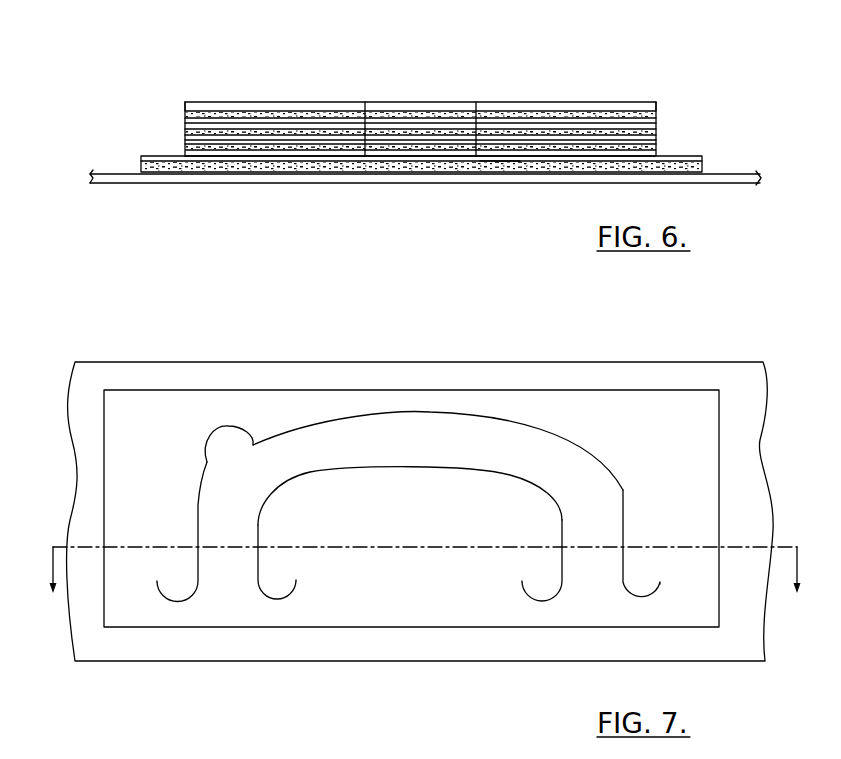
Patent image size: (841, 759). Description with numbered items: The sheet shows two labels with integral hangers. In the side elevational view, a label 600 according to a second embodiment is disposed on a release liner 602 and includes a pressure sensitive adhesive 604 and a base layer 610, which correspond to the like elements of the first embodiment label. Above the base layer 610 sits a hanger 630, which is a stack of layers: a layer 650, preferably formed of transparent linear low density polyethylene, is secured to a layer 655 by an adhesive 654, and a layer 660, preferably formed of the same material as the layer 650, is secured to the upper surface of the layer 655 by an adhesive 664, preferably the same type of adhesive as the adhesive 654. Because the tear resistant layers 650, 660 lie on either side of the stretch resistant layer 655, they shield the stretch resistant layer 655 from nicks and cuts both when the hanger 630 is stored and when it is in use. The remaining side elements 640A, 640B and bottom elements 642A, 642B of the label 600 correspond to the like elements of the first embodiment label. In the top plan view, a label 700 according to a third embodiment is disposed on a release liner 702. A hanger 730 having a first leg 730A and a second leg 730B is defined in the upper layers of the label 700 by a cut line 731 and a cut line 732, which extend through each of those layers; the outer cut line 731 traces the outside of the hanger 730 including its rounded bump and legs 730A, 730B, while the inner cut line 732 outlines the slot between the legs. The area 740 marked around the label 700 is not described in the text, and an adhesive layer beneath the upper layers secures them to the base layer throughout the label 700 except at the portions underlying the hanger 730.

In FIG. 6, the label 600 is at (467, 68).
In FIG. 6, the release liner 602 is at (718, 173).
In FIG. 6, the pressure sensitive adhesive 604 is at (500, 167).
In FIG. 6, the base layer 610 is at (668, 161).
In FIG. 6, the hanger 630 is at (387, 88).
In FIG. 6, the first side section 640A is at (257, 88).
In FIG. 6, the second side section 640B is at (562, 96).
In FIG. 6, the first bottom element 642A is at (185, 149).
In FIG. 6, the second bottom element 642B is at (488, 149).
In FIG. 6, the layer 650 is at (186, 138).
In FIG. 6, the adhesive 654 is at (186, 132).
In FIG. 6, the layer 655 is at (186, 127).
In FIG. 6, the layer 660 is at (204, 102).
In FIG. 6, the adhesive 664 is at (186, 121).
In FIG. 7, the label 700 is at (474, 350).
In FIG. 7, the release liner 702 is at (464, 658).
In FIG. 7, the hanger 730 is at (415, 430).
In FIG. 7, the leg 730A is at (205, 503).
In FIG. 7, the leg 730B is at (607, 503).
In FIG. 7, the cut line 731 is at (208, 472).
In FIG. 7, the cut line 732 is at (262, 523).
In FIG. 7, the frame region 740 is at (117, 502).